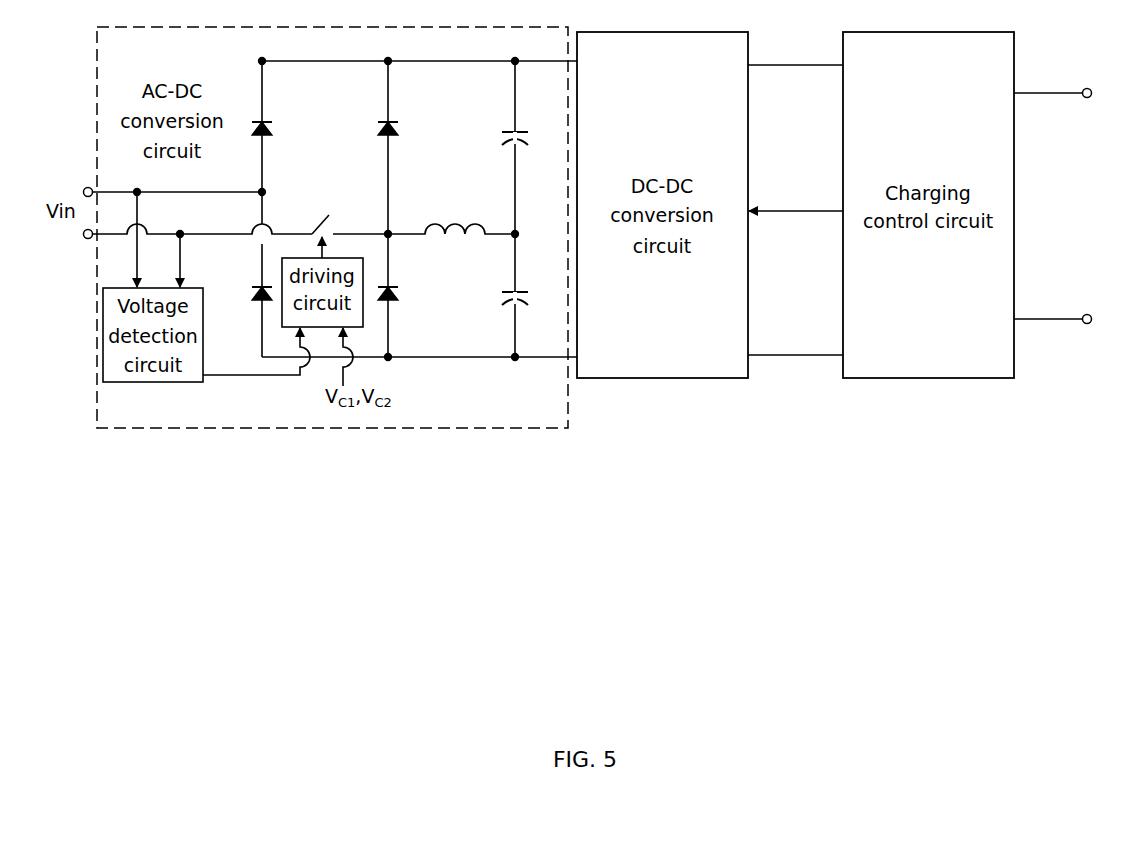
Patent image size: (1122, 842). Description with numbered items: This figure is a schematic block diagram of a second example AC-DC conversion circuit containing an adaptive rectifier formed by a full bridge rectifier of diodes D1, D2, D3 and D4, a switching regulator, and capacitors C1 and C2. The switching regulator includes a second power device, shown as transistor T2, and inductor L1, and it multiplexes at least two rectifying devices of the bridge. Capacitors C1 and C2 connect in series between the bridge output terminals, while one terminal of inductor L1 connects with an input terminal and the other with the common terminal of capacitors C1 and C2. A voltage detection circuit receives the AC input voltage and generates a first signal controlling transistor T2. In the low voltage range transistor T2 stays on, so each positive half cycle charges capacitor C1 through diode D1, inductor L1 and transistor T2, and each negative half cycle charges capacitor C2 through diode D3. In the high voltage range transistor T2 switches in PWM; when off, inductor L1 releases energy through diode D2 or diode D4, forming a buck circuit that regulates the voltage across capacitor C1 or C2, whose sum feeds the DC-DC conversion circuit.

The diode D1 is at (280, 125).
The diode D2 is at (406, 125).
The diode D3 is at (244, 281).
The diode D4 is at (403, 281).
The second power device T2 is at (343, 211).
The inductor L1 is at (451, 214).
The capacitor C1 is at (529, 133).
The capacitor C2 is at (529, 295).